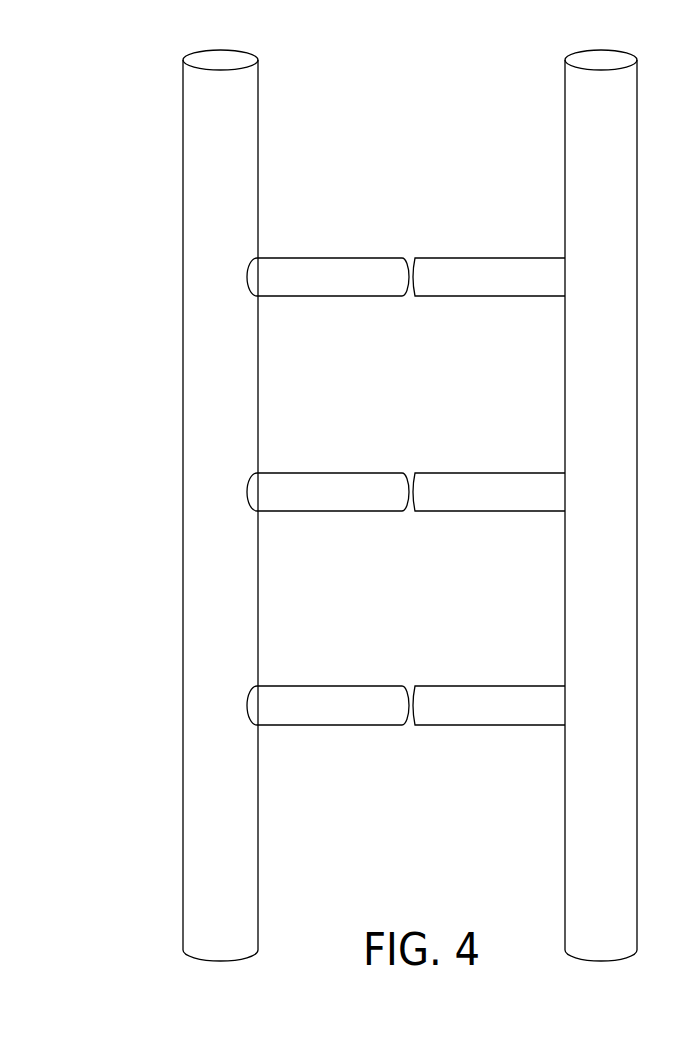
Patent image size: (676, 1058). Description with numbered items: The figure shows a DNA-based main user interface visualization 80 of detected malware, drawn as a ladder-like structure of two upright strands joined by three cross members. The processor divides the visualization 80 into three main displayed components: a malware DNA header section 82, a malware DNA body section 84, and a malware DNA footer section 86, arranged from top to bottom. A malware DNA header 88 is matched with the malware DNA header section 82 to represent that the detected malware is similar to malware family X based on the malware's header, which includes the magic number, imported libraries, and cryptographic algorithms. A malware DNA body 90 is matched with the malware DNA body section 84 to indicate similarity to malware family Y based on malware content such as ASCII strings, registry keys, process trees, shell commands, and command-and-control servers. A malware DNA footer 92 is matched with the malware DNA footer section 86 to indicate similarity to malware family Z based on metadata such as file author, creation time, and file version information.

The main user interface visualization 80 is at (98, 198).
The malware DNA header section 82 is at (355, 297).
The malware DNA body section 84 is at (355, 512).
The malware DNA footer section 86 is at (356, 727).
The malware DNA header 88 is at (483, 257).
The malware DNA body 90 is at (482, 472).
The malware DNA footer 92 is at (483, 685).